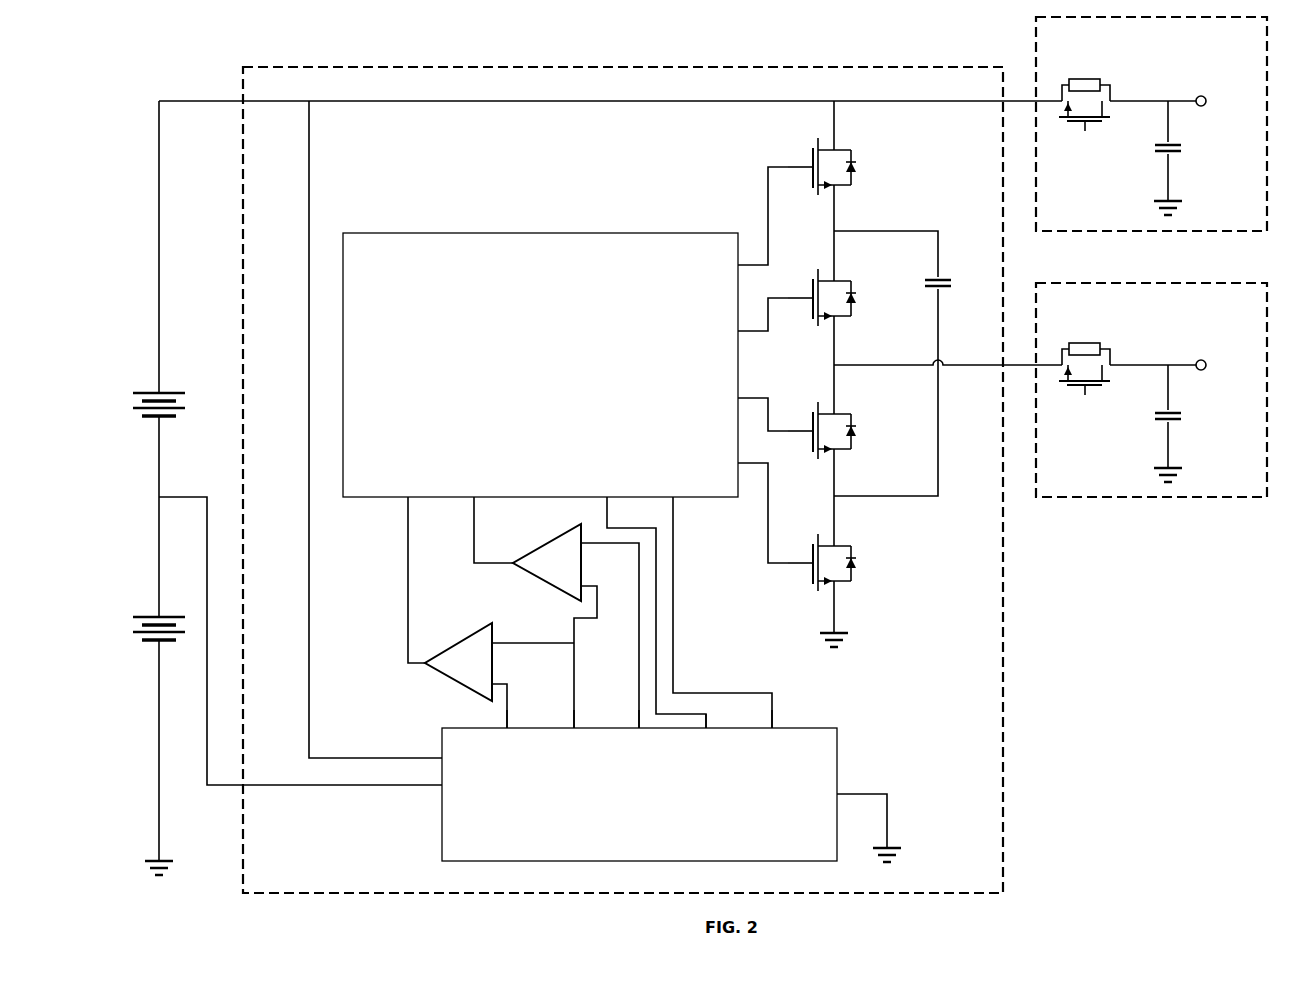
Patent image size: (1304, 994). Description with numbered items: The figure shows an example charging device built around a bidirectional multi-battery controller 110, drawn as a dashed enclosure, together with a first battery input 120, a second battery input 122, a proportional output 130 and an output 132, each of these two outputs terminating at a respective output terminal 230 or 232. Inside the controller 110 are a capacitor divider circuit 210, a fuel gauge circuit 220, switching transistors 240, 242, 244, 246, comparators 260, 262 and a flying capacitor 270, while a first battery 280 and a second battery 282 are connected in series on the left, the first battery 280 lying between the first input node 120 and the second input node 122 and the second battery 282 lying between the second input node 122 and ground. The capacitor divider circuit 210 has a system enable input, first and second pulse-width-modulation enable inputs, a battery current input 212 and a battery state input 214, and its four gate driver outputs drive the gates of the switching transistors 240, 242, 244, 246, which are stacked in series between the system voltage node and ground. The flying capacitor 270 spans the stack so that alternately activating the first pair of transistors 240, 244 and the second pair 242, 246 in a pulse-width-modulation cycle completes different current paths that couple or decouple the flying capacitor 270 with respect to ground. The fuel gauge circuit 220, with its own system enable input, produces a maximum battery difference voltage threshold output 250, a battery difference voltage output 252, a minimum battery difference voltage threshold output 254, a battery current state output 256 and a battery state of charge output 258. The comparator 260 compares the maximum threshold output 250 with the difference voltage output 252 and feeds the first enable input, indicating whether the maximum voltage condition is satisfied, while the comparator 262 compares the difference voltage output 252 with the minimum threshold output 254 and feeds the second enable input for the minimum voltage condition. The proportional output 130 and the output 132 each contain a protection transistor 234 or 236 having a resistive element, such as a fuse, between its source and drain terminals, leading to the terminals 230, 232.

The bidirectional multi-battery controller 110 is at (969, 869).
The first battery input 120 is at (383, 760).
The second battery input 122 is at (371, 791).
The proportional output 130 is at (1249, 60).
The output 132 is at (1249, 325).
The capacitor divider circuit 210 is at (526, 441).
The battery current input 212 is at (649, 600).
The battery state input 214 is at (715, 600).
The fuel gauge circuit 220 is at (625, 853).
The first output terminal 230 is at (1223, 100).
The second output terminal 232 is at (1223, 364).
The protection transistor 234 is at (1084, 89).
The protection transistor 236 is at (1084, 353).
The switching transistor 240 is at (839, 166).
The switching transistor 242 is at (839, 297).
The switching transistor 244 is at (839, 430).
The switching transistor 246 is at (839, 562).
The maximum battery difference voltage threshold output 250 is at (507, 732).
The battery difference voltage output 252 is at (574, 732).
The minimum battery difference voltage threshold output 254 is at (639, 732).
The battery current state output 256 is at (706, 734).
The battery state of charge output 258 is at (772, 732).
The comparator 260 is at (468, 690).
The comparator 262 is at (541, 585).
The flying capacitor 270 is at (910, 363).
The first battery 280 is at (137, 407).
The second battery 282 is at (137, 629).